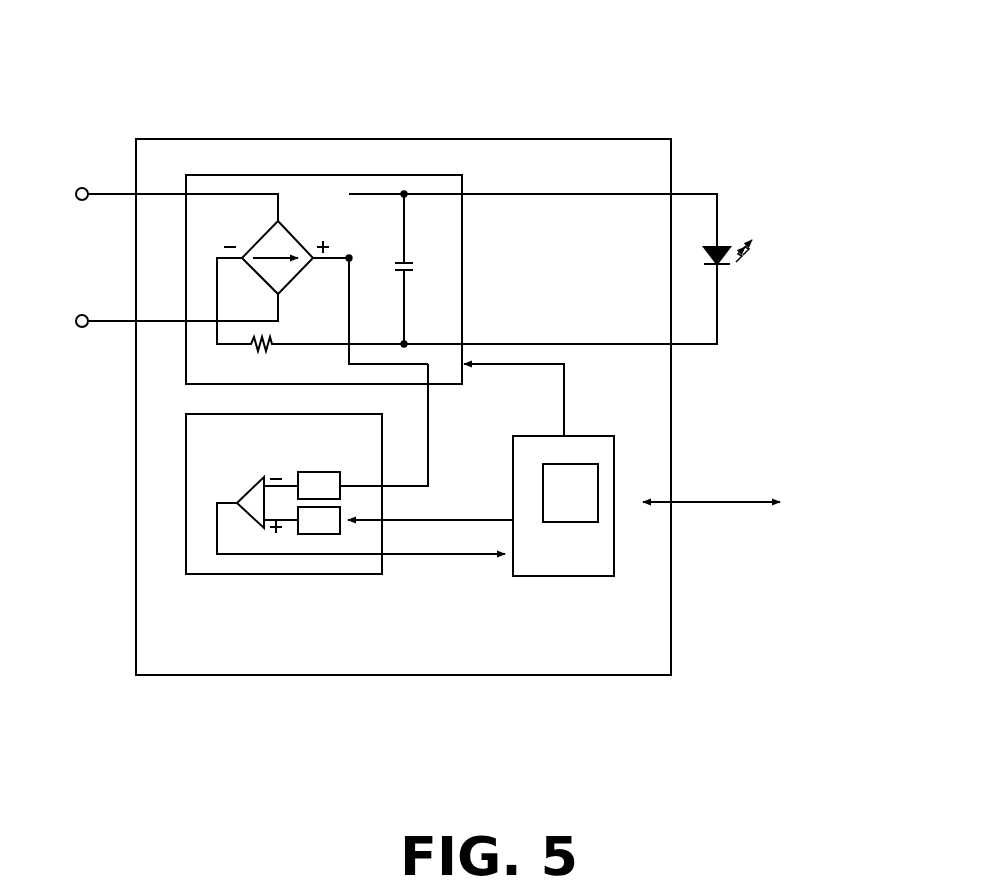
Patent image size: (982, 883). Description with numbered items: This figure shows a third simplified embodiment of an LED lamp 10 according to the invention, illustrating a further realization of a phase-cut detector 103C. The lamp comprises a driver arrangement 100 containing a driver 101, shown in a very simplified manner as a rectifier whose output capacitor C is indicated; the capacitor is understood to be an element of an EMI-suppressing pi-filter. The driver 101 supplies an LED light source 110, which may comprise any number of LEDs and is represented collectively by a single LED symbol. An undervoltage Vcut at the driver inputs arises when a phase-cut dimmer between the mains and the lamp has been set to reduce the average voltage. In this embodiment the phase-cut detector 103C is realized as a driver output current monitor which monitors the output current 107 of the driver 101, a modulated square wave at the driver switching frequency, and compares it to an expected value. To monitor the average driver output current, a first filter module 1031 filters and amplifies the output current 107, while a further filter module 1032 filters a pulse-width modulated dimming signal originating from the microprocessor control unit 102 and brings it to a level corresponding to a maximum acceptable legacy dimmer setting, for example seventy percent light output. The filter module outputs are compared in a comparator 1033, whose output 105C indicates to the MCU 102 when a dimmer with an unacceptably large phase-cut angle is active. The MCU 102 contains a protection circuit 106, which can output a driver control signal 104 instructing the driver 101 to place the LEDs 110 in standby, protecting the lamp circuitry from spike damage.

The LED lamp 10 is at (589, 106).
The driver arrangement 100 is at (548, 675).
The driver 101 is at (418, 175).
The microprocessor control unit 102 is at (545, 576).
The phase-cut detector 103C is at (237, 574).
The first filter module 1031 is at (330, 472).
The further filter module 1032 is at (315, 534).
The comparator 1033 is at (247, 487).
The control signal 104 is at (565, 400).
The comparator output 105C is at (415, 554).
The protection circuit 106 is at (556, 522).
The driver output current 107 is at (428, 410).
The LED light source 110 is at (718, 266).
The output capacitor C is at (406, 262).
The undervoltage Vcut is at (165, 257).